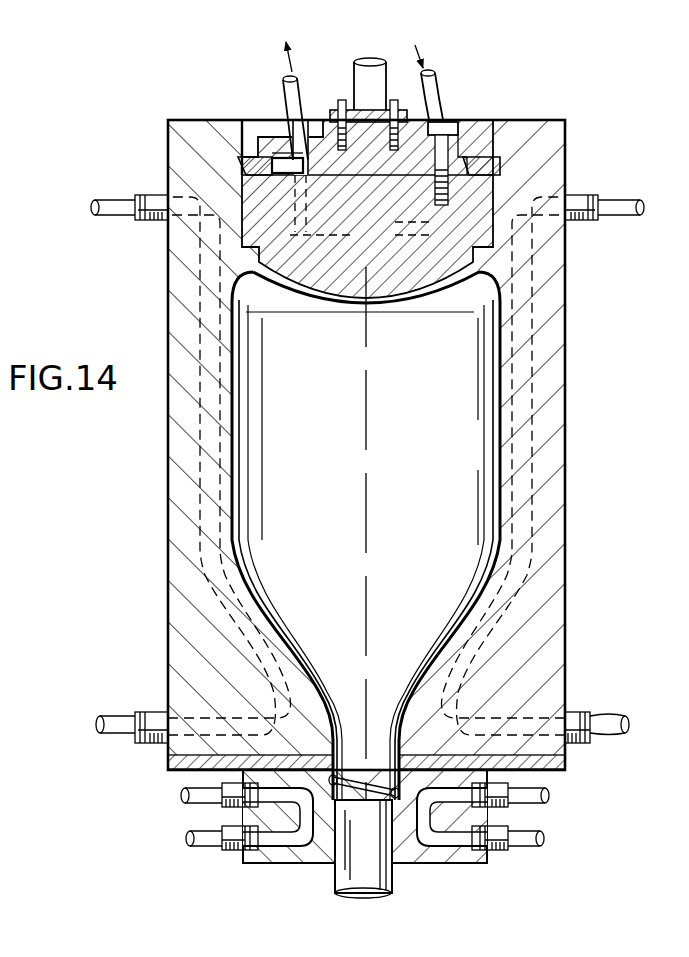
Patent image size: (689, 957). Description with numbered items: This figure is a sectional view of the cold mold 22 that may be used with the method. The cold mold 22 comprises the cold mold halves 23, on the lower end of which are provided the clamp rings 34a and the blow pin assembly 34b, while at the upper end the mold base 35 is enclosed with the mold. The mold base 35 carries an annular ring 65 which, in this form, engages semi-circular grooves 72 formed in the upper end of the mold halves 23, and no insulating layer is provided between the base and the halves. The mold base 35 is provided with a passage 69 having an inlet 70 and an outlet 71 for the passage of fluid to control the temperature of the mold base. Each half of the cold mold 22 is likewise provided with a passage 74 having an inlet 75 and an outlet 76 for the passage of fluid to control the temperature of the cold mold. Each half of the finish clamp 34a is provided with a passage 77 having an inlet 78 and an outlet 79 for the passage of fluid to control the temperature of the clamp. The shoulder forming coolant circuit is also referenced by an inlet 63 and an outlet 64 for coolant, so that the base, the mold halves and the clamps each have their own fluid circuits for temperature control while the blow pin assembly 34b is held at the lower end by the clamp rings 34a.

The cold mold 22 is at (556, 352).
The cold mold halves 23 is at (180, 502).
The clamp rings 34a is at (355, 835).
The blow pin assembly 34b is at (392, 882).
The mold base 35 is at (258, 197).
The inlet 63 is at (9, 756).
The outlet 64 is at (9, 713).
The annular ring 65 is at (250, 157).
The passage 69 is at (308, 245).
The inlet 70 is at (440, 103).
The outlet 71 is at (302, 96).
The semi-circular grooves 72 is at (497, 173).
The passage 74 is at (166, 334).
The inlet 75 is at (95, 722).
The outlet 76 is at (90, 207).
The passage 77 is at (258, 868).
The inlet 78 is at (188, 839).
The outlet 79 is at (183, 798).